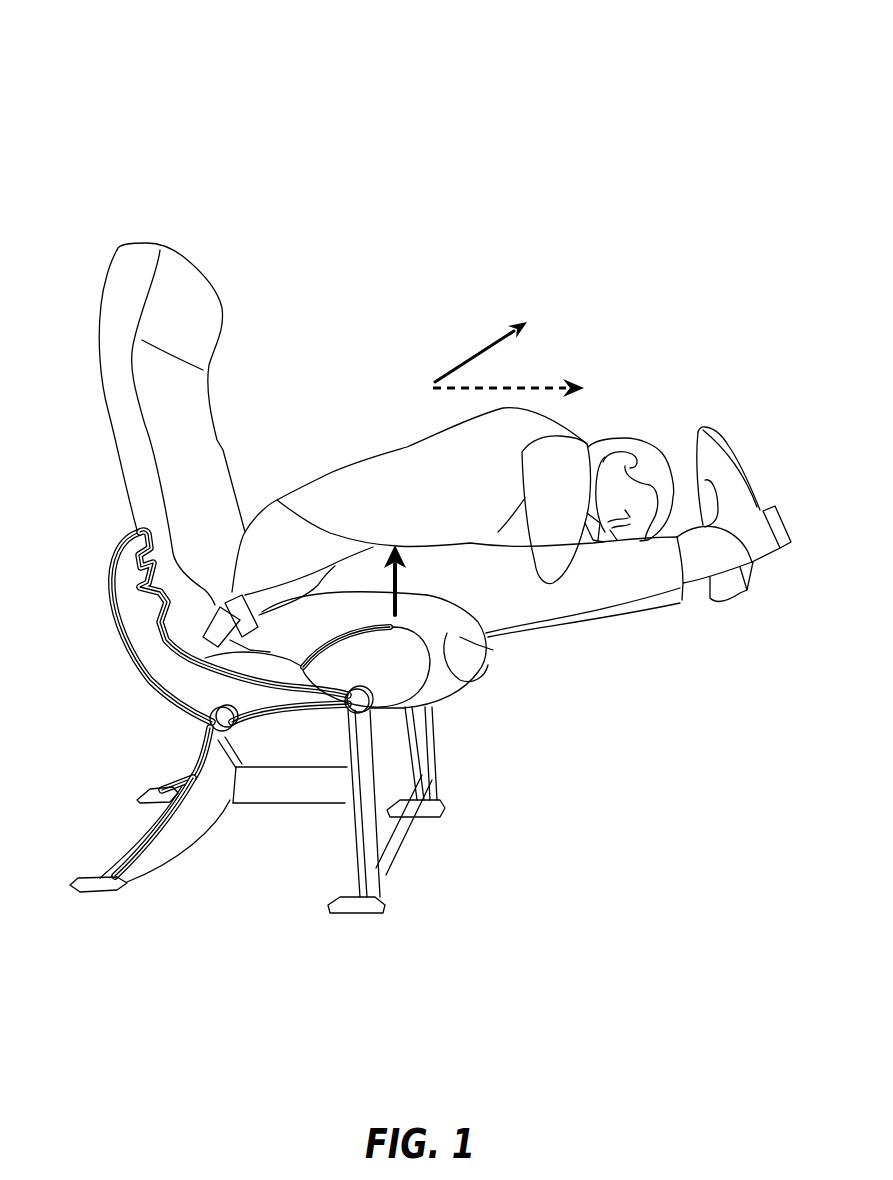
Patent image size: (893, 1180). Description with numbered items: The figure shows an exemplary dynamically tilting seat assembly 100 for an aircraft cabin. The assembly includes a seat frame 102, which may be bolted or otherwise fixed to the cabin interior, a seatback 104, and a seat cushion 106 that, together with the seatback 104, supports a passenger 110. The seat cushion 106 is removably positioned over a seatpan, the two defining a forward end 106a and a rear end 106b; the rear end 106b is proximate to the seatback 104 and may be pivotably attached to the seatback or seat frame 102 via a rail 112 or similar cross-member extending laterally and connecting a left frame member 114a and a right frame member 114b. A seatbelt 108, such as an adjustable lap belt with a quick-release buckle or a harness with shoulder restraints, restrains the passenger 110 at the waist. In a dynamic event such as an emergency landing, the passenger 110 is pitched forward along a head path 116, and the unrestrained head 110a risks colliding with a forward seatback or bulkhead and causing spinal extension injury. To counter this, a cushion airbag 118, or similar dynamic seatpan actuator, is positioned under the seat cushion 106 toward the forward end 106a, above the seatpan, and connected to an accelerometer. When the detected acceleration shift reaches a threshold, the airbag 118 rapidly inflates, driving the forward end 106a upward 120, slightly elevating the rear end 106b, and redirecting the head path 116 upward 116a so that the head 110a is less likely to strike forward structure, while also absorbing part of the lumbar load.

The dynamically tilting seat assembly 100 is at (74, 77).
The seat frame 102 is at (127, 570).
The seatback 104 is at (148, 260).
The seat cushion 106 is at (288, 633).
The forward end 106a is at (460, 637).
The rear end 106b is at (205, 658).
The seatbelt 108 is at (220, 592).
The passenger 110 is at (408, 457).
The head 110a is at (617, 440).
The rail 112 is at (208, 719).
The left frame member 114a is at (423, 767).
The right frame member 114b is at (363, 813).
The head path 116 is at (508, 386).
The upward head path 116a is at (462, 364).
The cushion airbag 118 is at (397, 670).
The upward direction 120 is at (391, 602).